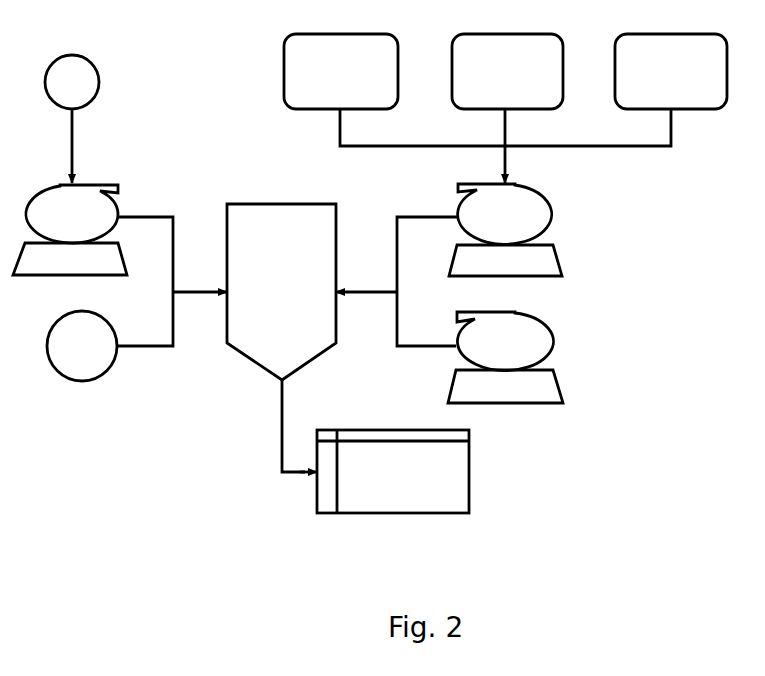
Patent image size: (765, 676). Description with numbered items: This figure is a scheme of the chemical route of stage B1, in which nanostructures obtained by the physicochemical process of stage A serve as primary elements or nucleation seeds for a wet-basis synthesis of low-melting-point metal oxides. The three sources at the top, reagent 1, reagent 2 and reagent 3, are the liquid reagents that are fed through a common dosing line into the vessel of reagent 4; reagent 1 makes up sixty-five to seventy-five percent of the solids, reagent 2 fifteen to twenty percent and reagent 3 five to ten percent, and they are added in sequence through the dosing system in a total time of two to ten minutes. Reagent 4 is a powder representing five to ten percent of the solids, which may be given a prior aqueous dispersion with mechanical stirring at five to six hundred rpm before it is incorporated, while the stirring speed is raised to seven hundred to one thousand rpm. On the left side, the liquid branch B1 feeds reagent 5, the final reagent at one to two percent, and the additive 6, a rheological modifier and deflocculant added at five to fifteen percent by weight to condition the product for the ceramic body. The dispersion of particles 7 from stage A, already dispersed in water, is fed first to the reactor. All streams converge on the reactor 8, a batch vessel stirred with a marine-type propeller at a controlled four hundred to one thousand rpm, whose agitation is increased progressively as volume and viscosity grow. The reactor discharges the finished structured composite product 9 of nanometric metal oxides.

The liquid processing stage B1 is at (72, 82).
The reagent 1 is at (341, 71).
The reagent 2 is at (507, 71).
The reagent 3 is at (671, 71).
The reagent 4 is at (505, 230).
The reagent 5 is at (70, 230).
The additive 6 is at (82, 346).
The dispersion of particles from stage A 7 is at (505, 357).
The reactor 8 is at (281, 292).
The product 9 is at (393, 471).